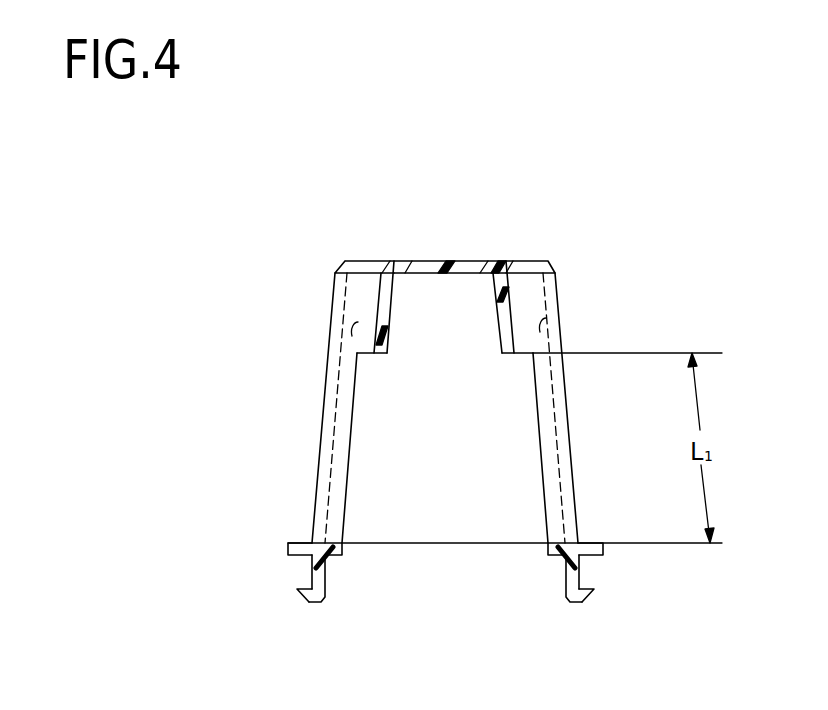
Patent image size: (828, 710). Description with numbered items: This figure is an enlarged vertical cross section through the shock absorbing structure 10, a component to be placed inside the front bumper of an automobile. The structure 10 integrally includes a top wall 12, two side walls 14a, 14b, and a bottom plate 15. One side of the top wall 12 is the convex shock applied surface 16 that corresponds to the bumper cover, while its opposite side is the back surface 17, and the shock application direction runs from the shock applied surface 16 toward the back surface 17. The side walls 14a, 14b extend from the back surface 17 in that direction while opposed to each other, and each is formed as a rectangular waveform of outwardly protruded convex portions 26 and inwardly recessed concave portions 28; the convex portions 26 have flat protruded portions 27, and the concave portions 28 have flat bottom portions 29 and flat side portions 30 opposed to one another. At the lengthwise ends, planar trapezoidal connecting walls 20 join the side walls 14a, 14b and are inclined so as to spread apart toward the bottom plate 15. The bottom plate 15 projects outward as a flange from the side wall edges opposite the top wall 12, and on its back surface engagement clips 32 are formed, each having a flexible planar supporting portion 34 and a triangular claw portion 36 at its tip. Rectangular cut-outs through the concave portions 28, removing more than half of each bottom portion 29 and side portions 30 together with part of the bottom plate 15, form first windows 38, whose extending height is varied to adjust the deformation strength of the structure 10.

The shock absorbing structure 10 is at (594, 258).
The top wall 12 is at (385, 259).
The side wall 14a is at (320, 450).
The side wall 14b is at (571, 469).
The bottom plate 15 is at (294, 546).
The shock applied surface 16 is at (438, 259).
The back surface 17 is at (420, 275).
The connecting wall 20 is at (438, 498).
The convex portion 26 is at (326, 373).
The protruded portion 27 is at (428, 362).
The concave portion 28 is at (378, 305).
The bottom portion 29 is at (421, 256).
The side portion 30 is at (352, 336).
The engagement clip 32 is at (320, 603).
The supporting portion 34 is at (316, 575).
The claw portion 36 is at (305, 598).
The first window 38 is at (341, 410).